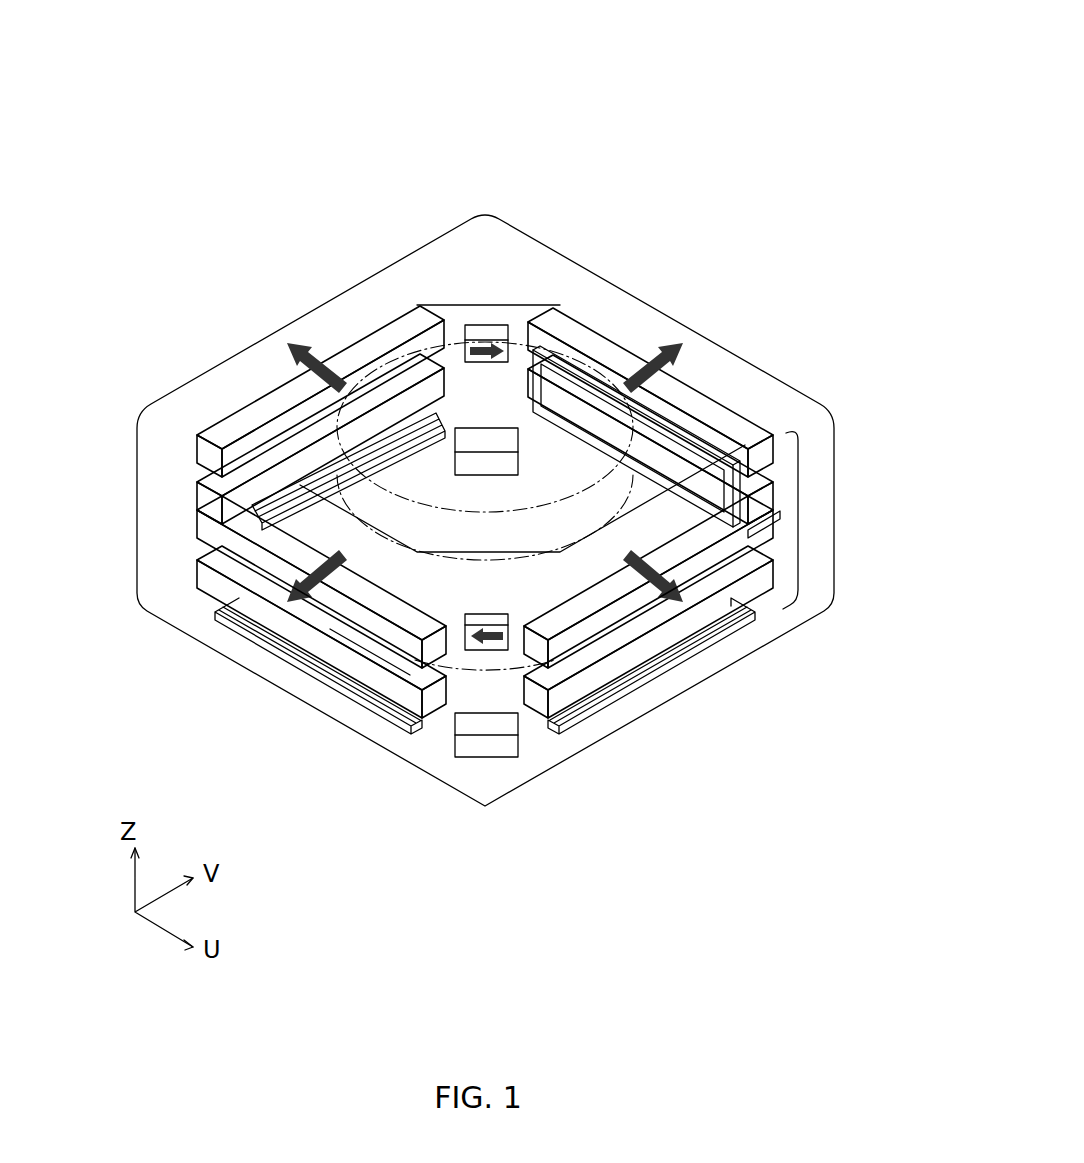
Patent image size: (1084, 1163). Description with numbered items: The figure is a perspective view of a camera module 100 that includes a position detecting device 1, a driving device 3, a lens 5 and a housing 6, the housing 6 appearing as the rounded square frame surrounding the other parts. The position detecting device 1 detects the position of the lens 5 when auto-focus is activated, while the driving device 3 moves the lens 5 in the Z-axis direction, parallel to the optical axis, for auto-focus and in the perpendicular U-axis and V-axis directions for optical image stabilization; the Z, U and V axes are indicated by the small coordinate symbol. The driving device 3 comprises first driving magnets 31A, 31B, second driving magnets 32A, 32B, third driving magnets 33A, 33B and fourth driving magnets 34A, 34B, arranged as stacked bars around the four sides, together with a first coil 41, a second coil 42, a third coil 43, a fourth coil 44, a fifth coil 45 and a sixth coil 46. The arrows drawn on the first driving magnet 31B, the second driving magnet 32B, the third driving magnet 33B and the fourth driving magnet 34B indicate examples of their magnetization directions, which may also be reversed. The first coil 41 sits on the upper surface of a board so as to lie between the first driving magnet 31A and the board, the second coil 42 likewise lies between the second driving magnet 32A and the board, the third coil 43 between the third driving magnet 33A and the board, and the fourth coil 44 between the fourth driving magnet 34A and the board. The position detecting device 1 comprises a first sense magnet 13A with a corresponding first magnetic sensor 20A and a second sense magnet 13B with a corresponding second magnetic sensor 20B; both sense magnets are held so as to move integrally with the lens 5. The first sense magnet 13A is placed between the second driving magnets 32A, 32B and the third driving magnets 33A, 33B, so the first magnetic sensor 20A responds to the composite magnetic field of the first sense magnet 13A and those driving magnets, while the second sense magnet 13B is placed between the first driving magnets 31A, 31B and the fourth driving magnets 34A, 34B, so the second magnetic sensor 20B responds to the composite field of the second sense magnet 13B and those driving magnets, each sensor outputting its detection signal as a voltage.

The camera module 100 is at (683, 108).
The position detecting device 1 is at (295, 143).
The driving device 3 is at (806, 513).
The lens 5 is at (610, 337).
The housing 6 is at (603, 270).
The first sense magnet 13A is at (472, 323).
The second sense magnet 13B is at (492, 652).
The first magnetic sensor 20A is at (470, 427).
The second magnetic sensor 20B is at (487, 758).
The first driving magnet 31A is at (418, 700).
The first driving magnet 31B is at (193, 523).
The second driving magnet 32A is at (527, 365).
The second driving magnet 32B is at (780, 452).
The third driving magnet 33A is at (413, 373).
The third driving magnet 33B is at (193, 452).
The fourth driving magnet 34A is at (597, 680).
The fourth driving magnet 34B is at (780, 525).
The first coil 41 is at (280, 667).
The second coil 42 is at (783, 437).
The third coil 43 is at (277, 487).
The fourth coil 44 is at (673, 667).
The fifth coil 45 is at (363, 642).
The sixth coil 46 is at (701, 430).